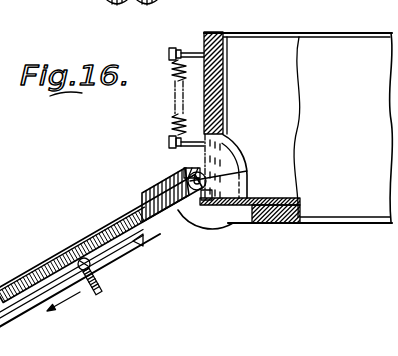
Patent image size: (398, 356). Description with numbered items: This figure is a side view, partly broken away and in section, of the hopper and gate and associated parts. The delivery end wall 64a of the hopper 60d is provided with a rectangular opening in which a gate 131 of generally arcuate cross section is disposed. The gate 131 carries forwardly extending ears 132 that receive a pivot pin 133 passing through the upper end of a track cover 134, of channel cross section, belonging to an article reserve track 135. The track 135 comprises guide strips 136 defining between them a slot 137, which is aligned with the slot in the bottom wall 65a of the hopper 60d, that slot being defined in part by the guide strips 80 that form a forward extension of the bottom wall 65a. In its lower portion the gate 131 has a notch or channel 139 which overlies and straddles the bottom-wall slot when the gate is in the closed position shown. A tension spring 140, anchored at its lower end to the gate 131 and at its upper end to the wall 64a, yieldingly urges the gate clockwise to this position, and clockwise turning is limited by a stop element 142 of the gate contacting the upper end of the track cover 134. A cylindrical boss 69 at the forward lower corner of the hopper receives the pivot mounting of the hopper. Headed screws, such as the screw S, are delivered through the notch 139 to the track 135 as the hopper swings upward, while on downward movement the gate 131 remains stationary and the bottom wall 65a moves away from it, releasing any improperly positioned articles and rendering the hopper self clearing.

The hopper 60d is at (328, 33).
The delivery end wall 64a is at (221, 34).
The tension spring 140 is at (174, 128).
The stop element 142 is at (184, 170).
The ears 132 is at (187, 181).
The gate 131 is at (240, 152).
The pivot pin 133 is at (244, 162).
The notch or channel 139 is at (249, 171).
The guide strips 80 is at (288, 198).
The bottom wall 65a is at (278, 220).
The cylindrical bosses 69 is at (207, 225).
The article reserve track 135 is at (80, 236).
The track cover 134 is at (134, 212).
The guide strips 136 is at (140, 246).
The slot 137 is at (1, 328).
The screw S is at (104, 285).